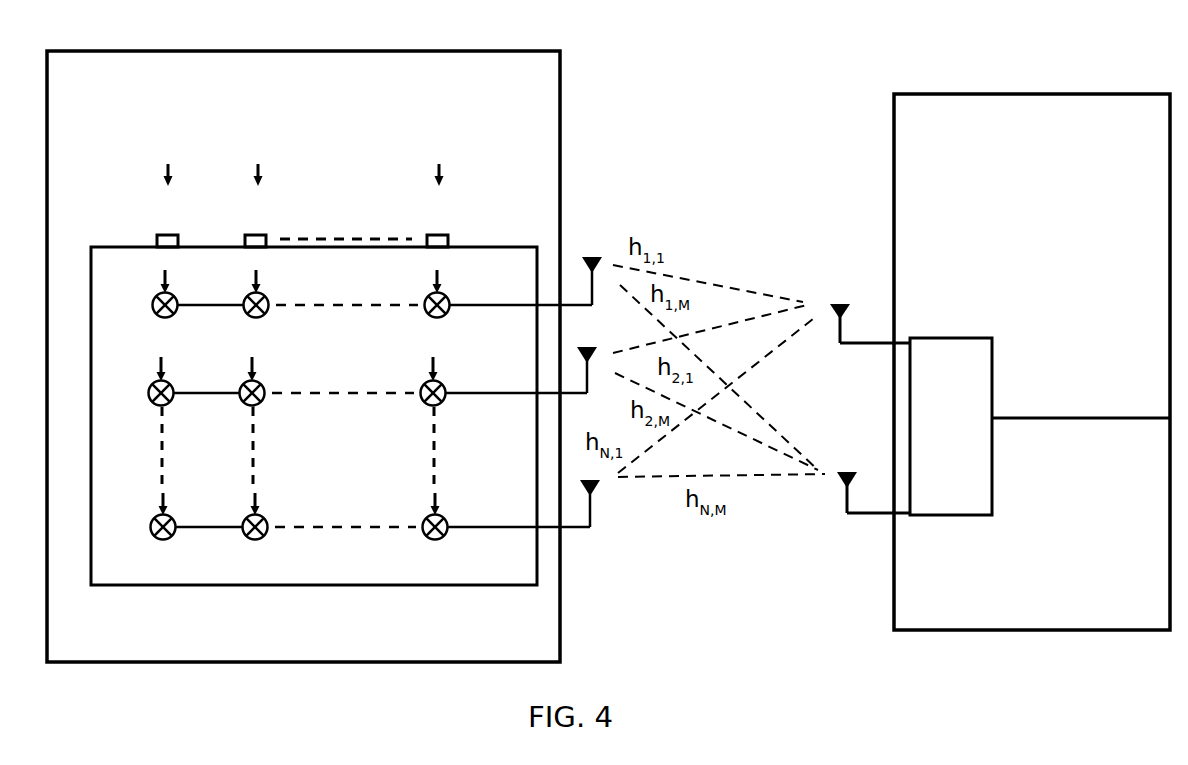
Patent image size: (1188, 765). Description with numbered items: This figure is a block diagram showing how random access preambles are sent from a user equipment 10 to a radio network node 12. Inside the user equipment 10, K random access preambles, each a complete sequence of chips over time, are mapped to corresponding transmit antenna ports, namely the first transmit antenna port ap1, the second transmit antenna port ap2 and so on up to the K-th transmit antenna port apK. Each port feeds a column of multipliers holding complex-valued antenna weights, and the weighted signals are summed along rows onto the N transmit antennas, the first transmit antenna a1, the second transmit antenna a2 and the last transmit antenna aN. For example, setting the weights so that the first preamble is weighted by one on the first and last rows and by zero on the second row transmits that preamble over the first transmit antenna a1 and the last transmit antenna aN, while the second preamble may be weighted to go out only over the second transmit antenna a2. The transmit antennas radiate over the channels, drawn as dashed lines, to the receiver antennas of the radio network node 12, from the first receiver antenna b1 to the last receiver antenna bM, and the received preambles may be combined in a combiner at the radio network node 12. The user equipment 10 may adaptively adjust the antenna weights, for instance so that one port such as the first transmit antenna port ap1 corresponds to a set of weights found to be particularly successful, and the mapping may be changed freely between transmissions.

The user equipment 10 is at (111, 647).
The radio network node 12 is at (944, 589).
The first transmit antenna port ap1 is at (157, 236).
The second transmit antenna port ap2 is at (249, 236).
The K-th transmit antenna port apK is at (440, 239).
The first transmit antenna a1 is at (603, 291).
The second transmit antenna a2 is at (599, 382).
The last transmit antenna aN is at (602, 522).
The first receiver antenna b1 is at (856, 302).
The last receiver antenna bM is at (856, 473).